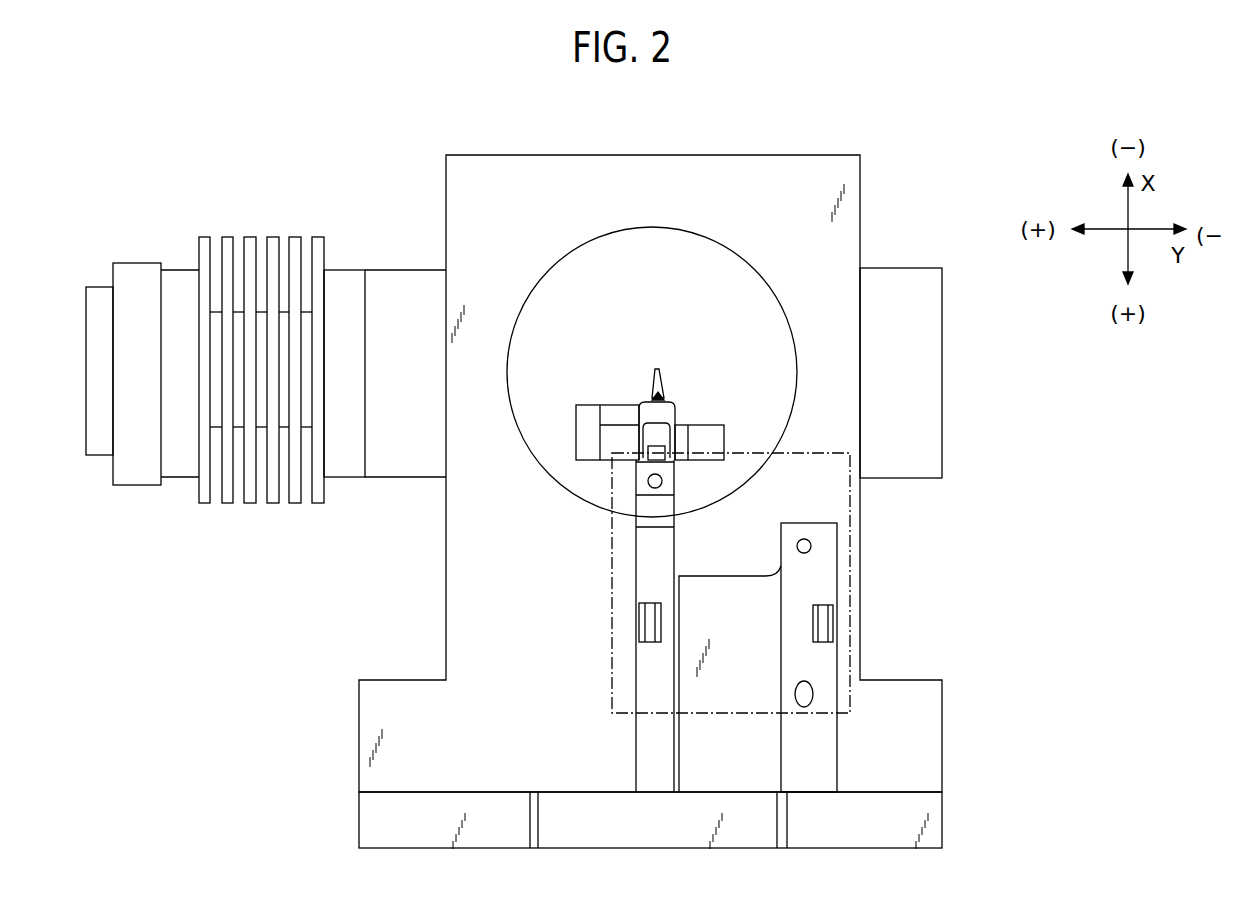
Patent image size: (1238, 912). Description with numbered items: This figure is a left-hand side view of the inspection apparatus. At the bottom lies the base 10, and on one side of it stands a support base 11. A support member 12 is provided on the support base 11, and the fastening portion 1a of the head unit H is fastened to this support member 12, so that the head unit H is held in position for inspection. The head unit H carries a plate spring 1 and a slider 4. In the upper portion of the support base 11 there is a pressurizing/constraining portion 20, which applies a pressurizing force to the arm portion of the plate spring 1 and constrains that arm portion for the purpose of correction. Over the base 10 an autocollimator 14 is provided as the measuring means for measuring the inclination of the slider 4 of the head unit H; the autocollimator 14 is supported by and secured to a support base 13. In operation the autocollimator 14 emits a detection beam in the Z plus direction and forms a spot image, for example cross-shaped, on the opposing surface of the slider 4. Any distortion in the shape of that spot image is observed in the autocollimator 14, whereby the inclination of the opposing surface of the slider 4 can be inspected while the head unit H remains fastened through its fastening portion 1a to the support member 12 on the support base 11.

The plate spring 1 is at (655, 386).
The fastening portion 1a is at (676, 485).
The slider 4 is at (653, 371).
The base 10 is at (473, 828).
The support base 11 is at (806, 737).
The support member 12 is at (610, 657).
The support base 13 is at (783, 185).
The autocollimator 14 is at (898, 297).
The pressurizing/constraining portion 20 is at (552, 452).
The head unit H is at (678, 379).